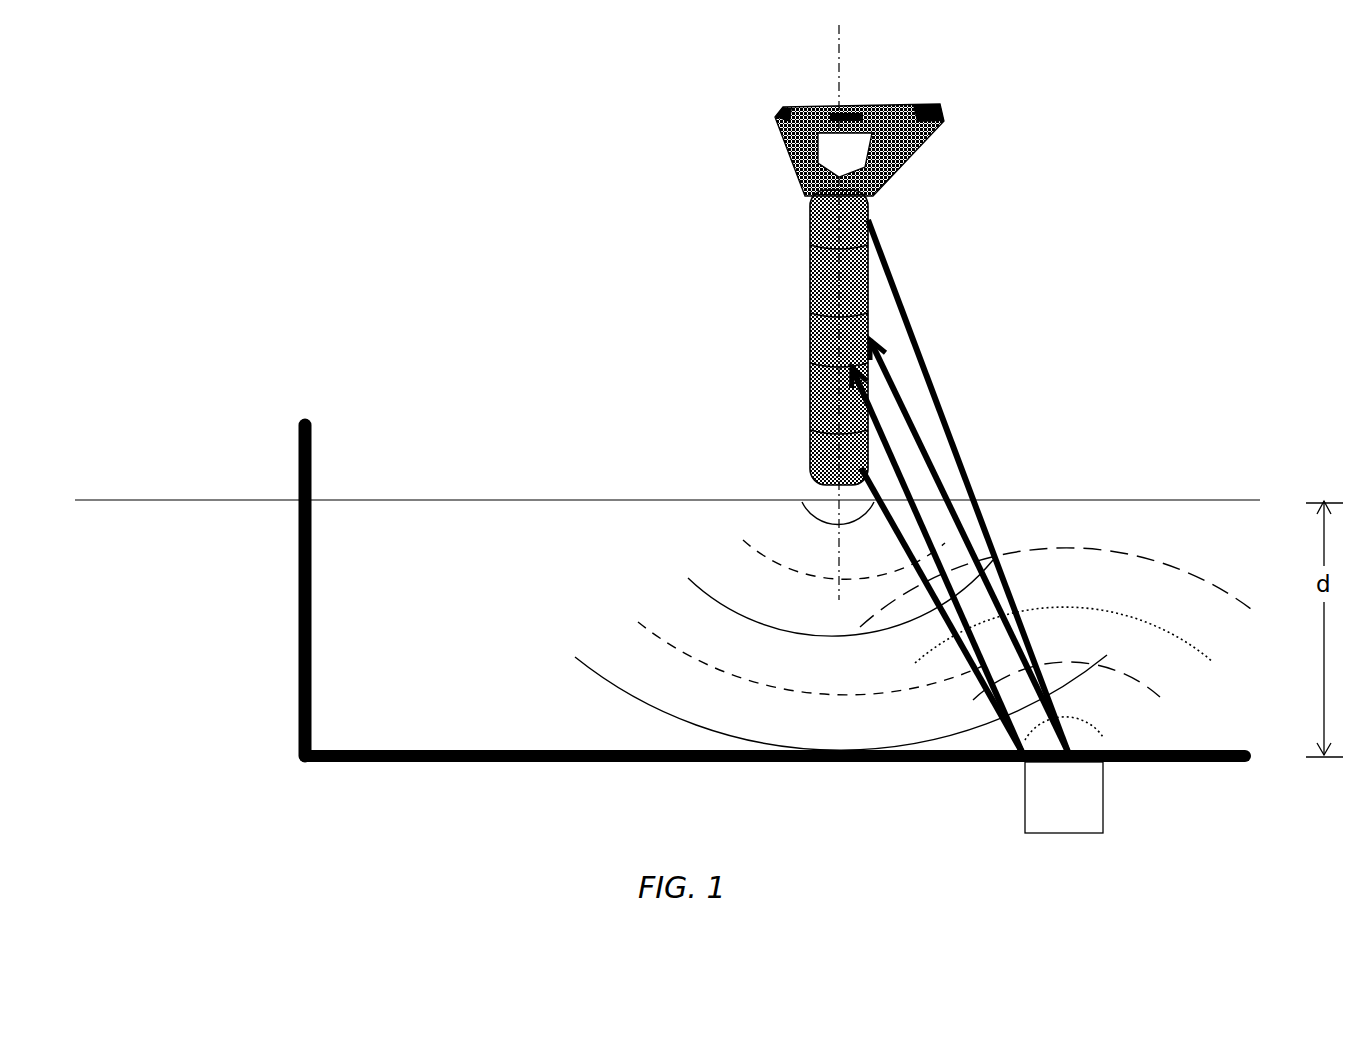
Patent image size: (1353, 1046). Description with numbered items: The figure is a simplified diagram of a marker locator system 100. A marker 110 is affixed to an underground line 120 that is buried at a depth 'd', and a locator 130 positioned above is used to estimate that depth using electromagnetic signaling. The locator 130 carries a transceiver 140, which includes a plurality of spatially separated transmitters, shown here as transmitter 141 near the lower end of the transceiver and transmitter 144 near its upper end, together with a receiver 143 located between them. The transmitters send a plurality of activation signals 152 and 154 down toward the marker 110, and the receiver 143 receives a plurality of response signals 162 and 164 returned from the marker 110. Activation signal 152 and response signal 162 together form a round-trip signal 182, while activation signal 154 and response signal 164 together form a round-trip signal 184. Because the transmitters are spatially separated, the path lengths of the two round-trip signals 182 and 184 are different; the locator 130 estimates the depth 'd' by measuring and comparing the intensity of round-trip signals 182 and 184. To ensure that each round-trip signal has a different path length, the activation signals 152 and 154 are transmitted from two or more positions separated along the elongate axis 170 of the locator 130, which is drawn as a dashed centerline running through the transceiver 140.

The marker locator system 100 is at (107, 102).
The marker 110 is at (1083, 809).
The underground line 120 is at (287, 627).
The locator 130 is at (710, 128).
The transceiver 140 is at (796, 335).
The transmitter 141 is at (812, 458).
The receiver 143 is at (812, 345).
The transmitter 144 is at (812, 217).
The activation signal 152 is at (688, 587).
The activation signal 154 is at (638, 625).
The response signal 162 is at (1163, 698).
The response signal 164 is at (1210, 651).
The elongate axis 170 is at (838, 62).
The round-trip signal 182 is at (897, 470).
The round-trip signal 184 is at (970, 483).